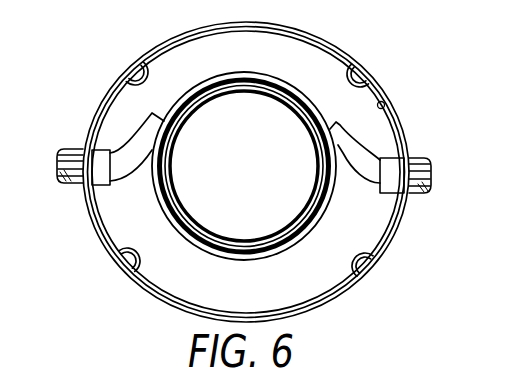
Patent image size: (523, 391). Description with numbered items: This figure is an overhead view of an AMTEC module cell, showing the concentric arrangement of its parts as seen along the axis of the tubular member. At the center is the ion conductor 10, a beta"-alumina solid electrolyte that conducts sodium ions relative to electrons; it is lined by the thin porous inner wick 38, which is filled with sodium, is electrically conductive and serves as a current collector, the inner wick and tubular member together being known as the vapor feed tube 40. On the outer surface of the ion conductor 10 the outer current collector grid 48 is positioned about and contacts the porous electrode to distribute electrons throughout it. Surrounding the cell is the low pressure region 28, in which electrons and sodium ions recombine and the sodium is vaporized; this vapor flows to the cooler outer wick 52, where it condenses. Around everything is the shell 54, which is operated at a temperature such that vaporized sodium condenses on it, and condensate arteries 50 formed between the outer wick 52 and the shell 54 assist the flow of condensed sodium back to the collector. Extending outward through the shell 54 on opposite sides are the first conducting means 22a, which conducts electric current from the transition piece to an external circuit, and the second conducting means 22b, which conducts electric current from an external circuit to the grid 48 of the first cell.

The ion conductor 10 is at (323, 213).
The first conducting means 22a is at (430, 160).
The second conducting means 22b is at (57, 170).
The low pressure region 28 is at (382, 207).
The inner wick 38 is at (279, 222).
The vapor feed tube 40 is at (225, 210).
The outer current collector grid 48 is at (323, 213).
The condensate arteries 50 is at (361, 77).
The outer wick 52 is at (396, 110).
The shell 54 is at (331, 37).